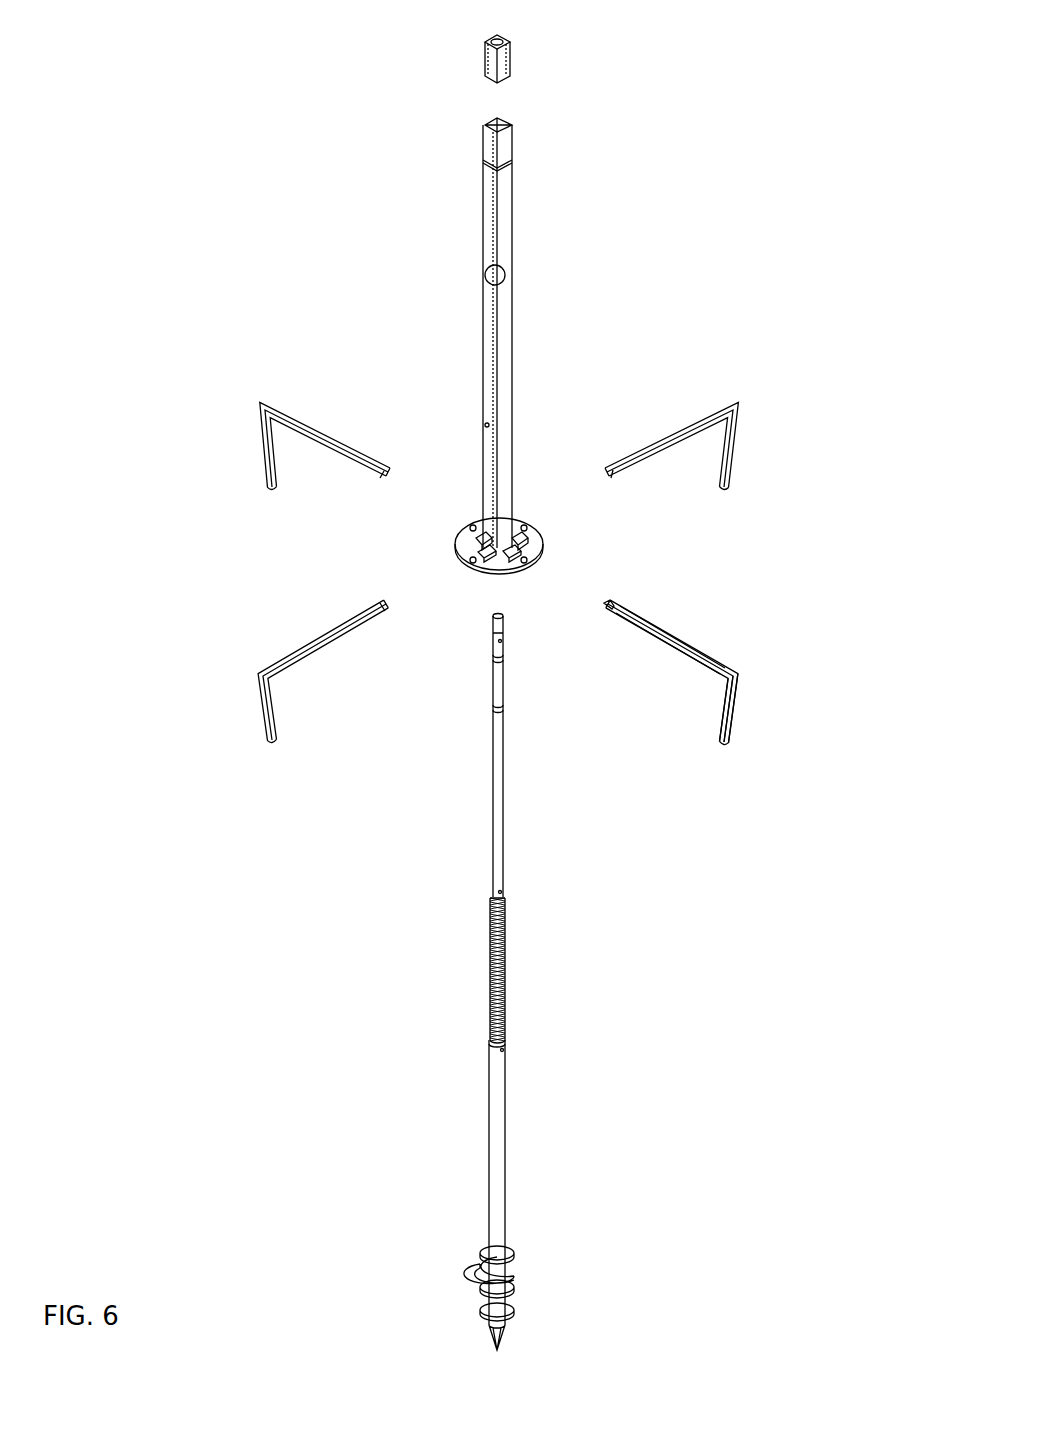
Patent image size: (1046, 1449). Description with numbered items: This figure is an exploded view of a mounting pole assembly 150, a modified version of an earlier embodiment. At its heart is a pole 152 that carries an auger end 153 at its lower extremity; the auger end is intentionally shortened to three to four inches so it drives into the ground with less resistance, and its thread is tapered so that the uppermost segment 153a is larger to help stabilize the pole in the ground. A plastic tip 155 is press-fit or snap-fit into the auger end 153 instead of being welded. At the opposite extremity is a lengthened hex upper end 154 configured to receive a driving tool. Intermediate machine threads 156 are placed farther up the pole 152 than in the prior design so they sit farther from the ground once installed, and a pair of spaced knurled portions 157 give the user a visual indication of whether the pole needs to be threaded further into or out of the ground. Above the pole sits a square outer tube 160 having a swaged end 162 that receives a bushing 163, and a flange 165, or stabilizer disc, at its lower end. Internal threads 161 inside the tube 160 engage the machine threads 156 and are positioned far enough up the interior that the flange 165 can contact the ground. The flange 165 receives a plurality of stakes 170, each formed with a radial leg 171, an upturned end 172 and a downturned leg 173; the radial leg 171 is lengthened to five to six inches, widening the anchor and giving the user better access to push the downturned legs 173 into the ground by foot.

The pole assembly 150 is at (432, 958).
The pole 152 is at (492, 1118).
The auger end 153 is at (583, 1244).
The uppermost segment of the thread 153a is at (510, 1262).
The upper end 154 is at (493, 623).
The tip 155 is at (505, 1335).
The machine threads 156 is at (508, 978).
The knurled portions 157 is at (503, 710).
The outer tube 160 is at (526, 330).
The internal threads 161 is at (482, 278).
The swaged end 162 is at (505, 140).
The bushing 163 is at (507, 50).
The flange 165 is at (470, 545).
The stakes 170 is at (746, 650).
The radial leg 171 is at (650, 622).
The upturned end 172 is at (612, 598).
The downturned leg 173 is at (735, 722).